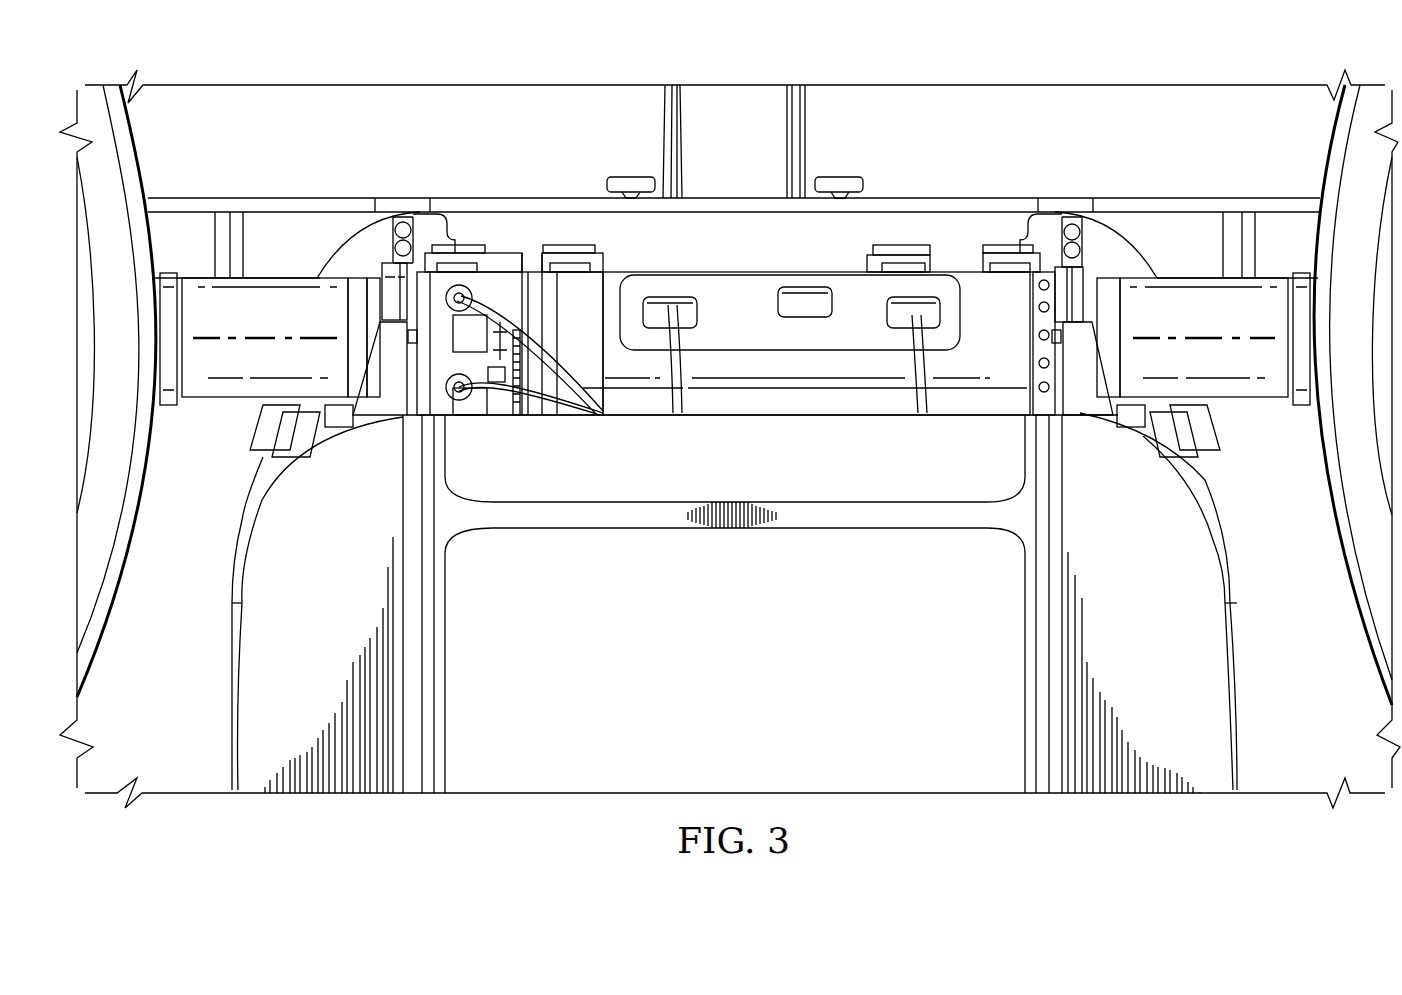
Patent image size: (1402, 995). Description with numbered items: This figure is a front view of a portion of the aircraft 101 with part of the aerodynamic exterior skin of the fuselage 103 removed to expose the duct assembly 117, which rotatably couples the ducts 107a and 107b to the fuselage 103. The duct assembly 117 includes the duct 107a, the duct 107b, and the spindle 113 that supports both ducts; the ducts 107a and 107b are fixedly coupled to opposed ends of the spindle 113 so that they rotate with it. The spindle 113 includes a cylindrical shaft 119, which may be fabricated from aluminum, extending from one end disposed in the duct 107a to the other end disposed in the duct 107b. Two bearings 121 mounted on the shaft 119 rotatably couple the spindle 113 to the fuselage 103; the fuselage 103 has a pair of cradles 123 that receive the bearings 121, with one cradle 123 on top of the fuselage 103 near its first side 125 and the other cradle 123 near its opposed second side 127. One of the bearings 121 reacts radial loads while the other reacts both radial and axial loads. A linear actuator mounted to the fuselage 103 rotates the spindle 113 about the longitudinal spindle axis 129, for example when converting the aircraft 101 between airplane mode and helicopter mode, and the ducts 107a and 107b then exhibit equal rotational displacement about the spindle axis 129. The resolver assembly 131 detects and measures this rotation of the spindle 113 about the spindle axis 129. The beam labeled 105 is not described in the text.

The aircraft 101 is at (1146, 155).
The fuselage 103 is at (228, 758).
The cross beam 105 is at (477, 197).
The duct 107a is at (147, 152).
The duct 107b is at (1327, 151).
The spindle 113 is at (603, 290).
The duct assembly 117 is at (760, 283).
The shaft 119 is at (980, 290).
The bearings 121 is at (392, 290).
The cradles 123 is at (380, 403).
The first side 125 is at (228, 652).
The second side 127 is at (1240, 652).
The spindle axis 129 is at (265, 342).
The resolver assembly 131 is at (498, 405).